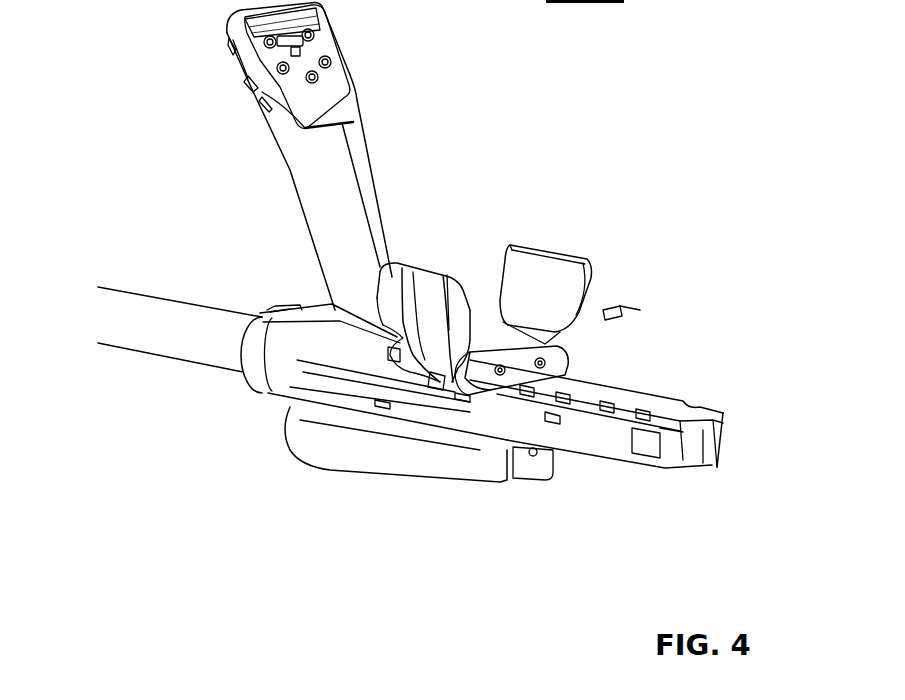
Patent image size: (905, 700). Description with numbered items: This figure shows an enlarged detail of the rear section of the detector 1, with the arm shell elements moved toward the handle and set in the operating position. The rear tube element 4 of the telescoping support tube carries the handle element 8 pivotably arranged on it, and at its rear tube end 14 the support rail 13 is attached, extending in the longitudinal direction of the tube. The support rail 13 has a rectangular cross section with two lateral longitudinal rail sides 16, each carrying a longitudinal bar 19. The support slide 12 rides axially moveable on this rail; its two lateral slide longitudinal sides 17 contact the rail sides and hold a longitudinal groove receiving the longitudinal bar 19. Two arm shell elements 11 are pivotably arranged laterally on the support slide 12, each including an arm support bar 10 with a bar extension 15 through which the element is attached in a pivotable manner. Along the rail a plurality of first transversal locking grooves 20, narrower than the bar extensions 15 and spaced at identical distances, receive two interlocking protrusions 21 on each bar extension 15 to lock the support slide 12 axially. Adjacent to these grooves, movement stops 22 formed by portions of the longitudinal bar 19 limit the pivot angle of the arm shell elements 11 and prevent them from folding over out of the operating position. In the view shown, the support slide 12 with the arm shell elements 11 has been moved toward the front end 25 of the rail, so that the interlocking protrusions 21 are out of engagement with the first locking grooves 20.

The detector 1 is at (133, 123).
The rear tube element 4 is at (110, 331).
The handle element 8 is at (318, 204).
The arm support bar 10 is at (422, 286).
The arm shell element 11 is at (451, 250).
The support slide 12 is at (562, 363).
The support rail 13 is at (363, 390).
The rear tube end 14 is at (223, 332).
The bar extension 15 is at (527, 338).
The longitudinal rail side 16 is at (539, 419).
The slide longitudinal side 17 is at (434, 384).
The longitudinal bar 19 is at (719, 421).
The first transversal locking groove 20 is at (654, 393).
The interlocking protrusion 21 is at (461, 401).
The movement stop 22 is at (643, 423).
The front end 25 is at (378, 356).